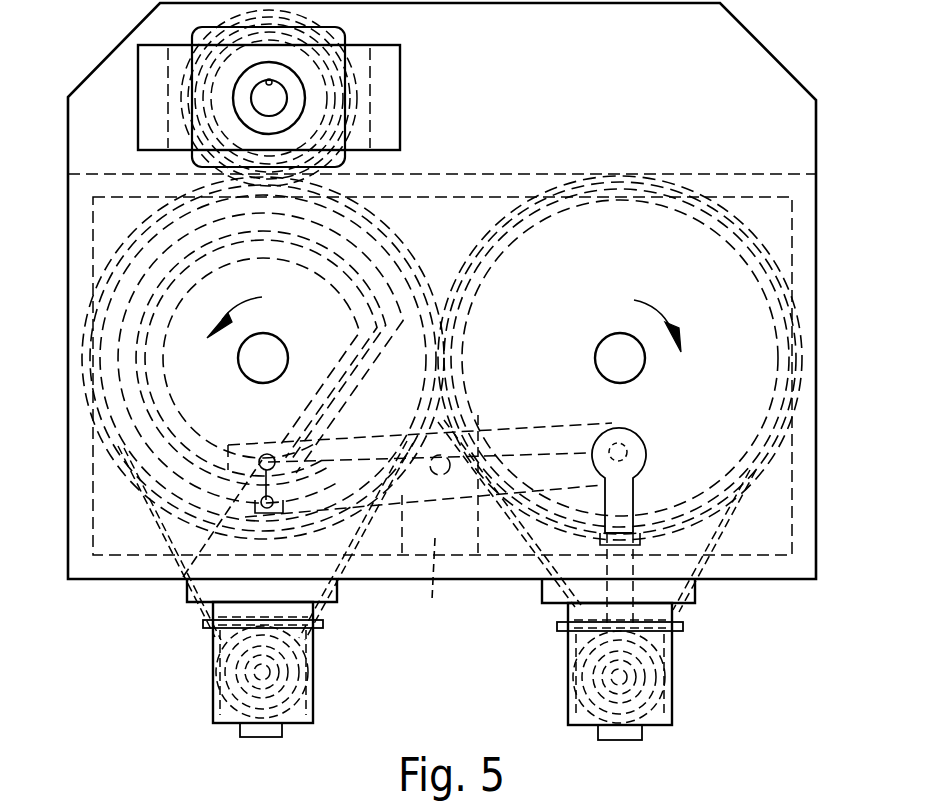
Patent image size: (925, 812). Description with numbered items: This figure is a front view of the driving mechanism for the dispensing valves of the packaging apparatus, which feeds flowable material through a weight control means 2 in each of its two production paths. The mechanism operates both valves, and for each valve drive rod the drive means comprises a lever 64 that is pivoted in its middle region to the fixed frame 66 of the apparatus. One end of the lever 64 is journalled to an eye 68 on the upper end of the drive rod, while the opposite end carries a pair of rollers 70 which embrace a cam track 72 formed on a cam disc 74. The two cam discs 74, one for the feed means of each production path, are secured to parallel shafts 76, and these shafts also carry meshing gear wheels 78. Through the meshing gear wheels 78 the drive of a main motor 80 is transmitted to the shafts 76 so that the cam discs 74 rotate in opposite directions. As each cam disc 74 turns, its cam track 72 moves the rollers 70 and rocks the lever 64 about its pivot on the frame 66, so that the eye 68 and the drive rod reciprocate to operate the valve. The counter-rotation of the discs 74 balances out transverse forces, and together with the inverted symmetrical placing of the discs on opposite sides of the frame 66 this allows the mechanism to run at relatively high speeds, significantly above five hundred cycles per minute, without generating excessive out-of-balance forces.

The weight control means 2 is at (185, 652).
The lever 64 is at (513, 445).
The fixed frame 66 is at (440, 523).
The eye 68 is at (645, 445).
The pair of rollers 70 is at (183, 577).
The cam track 72 is at (118, 377).
The cam disc 74 is at (757, 316).
The parallel shafts 76 is at (612, 345).
The meshing gear wheels 78 is at (512, 218).
The main motor 80 is at (212, 95).